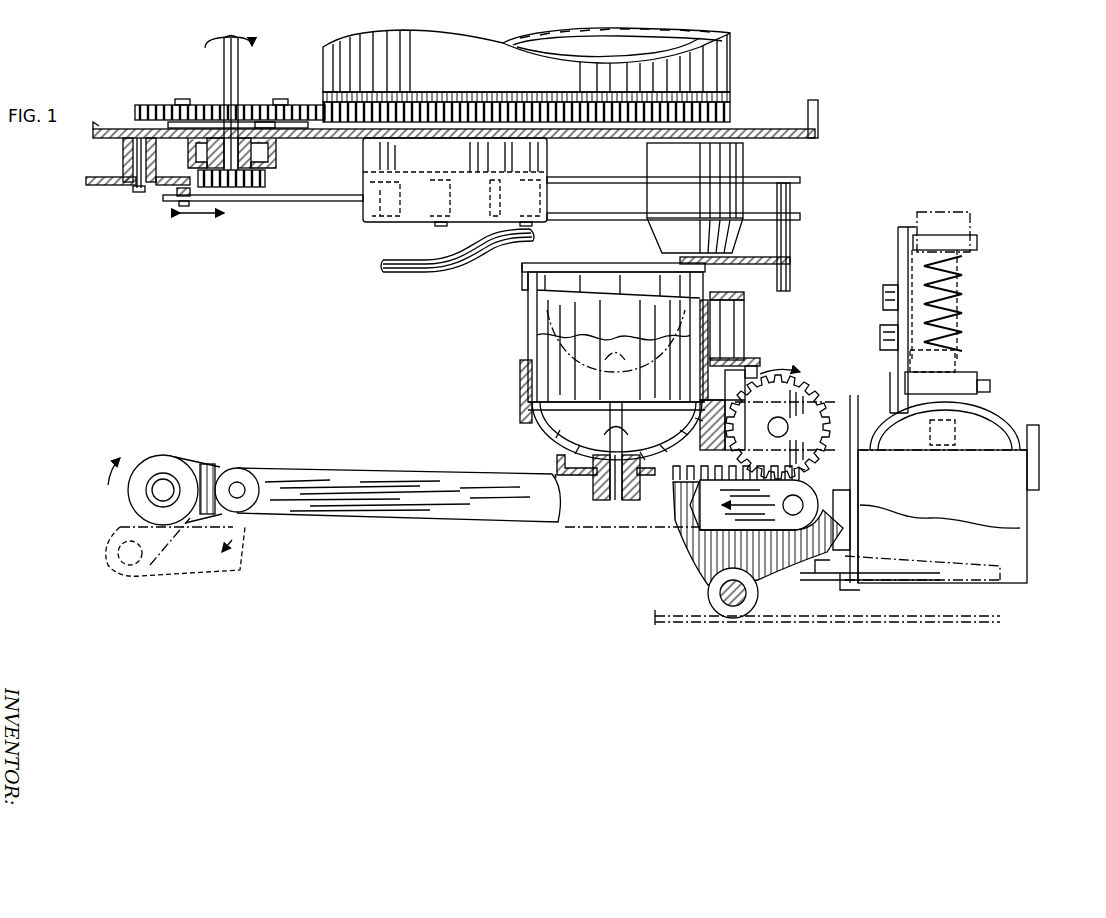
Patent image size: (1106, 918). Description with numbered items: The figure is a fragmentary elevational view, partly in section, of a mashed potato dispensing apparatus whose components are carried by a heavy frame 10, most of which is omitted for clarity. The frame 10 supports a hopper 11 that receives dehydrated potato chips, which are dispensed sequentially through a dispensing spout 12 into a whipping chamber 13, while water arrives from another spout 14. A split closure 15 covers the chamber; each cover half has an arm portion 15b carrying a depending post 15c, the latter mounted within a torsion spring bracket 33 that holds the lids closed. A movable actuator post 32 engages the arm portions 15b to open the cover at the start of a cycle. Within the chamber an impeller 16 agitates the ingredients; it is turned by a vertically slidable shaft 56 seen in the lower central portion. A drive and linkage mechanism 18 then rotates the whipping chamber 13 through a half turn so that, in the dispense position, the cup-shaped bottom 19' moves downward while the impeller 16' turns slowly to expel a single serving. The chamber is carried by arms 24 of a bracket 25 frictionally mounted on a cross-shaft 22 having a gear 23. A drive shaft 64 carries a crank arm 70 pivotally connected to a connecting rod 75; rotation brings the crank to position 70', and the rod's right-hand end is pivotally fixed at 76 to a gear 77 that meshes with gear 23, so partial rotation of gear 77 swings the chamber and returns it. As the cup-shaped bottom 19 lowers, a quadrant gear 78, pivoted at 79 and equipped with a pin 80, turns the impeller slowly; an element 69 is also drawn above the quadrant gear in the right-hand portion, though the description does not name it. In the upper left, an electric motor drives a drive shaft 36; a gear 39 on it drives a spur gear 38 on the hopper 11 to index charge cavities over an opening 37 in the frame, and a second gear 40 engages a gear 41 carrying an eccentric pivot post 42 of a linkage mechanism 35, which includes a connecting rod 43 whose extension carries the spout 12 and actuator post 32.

The frame 10 is at (822, 115).
The hopper 11 is at (728, 62).
The dispensing spout 12 is at (745, 162).
The whipping chamber 13 is at (522, 343).
The spout 14 is at (430, 278).
The closure 15 is at (583, 256).
The arm portion 15b is at (735, 262).
The depending post 15c is at (775, 286).
The impeller 16 is at (593, 397).
The impeller (dispense position) 16' is at (970, 487).
The drive and linkage mechanism 18 is at (442, 474).
The cup-shaped bottom 19 is at (617, 417).
The cup-shaped bottom (dispense position) 19' is at (963, 409).
The cross-shaft 22 is at (786, 433).
The gear 23 is at (810, 386).
The arms 24 is at (730, 398).
The bracket 25 is at (707, 432).
The actuator post 32 is at (792, 243).
The torsion spring bracket 33 is at (845, 600).
The linkage mechanism 35 is at (338, 206).
The drive shaft 36 is at (240, 73).
The opening 37 is at (700, 112).
The spur gear 38 is at (665, 131).
The gear 39 is at (218, 103).
The second gear 40 is at (268, 180).
The gear 41 is at (112, 188).
The eccentric pivot post 42 is at (172, 202).
The connecting rod 43 is at (288, 204).
The shaft 56 is at (614, 500).
The drive shaft 64 is at (165, 487).
The cap 69 is at (975, 232).
The crank arm 70 is at (172, 469).
The crank arm (rotated position) 70' is at (155, 545).
The connecting rod 75 is at (270, 468).
The pivot 76 is at (803, 505).
The gear 77 is at (706, 558).
The quadrant gear 78 is at (895, 226).
The pivot 79 is at (880, 338).
The pin 80 is at (885, 298).